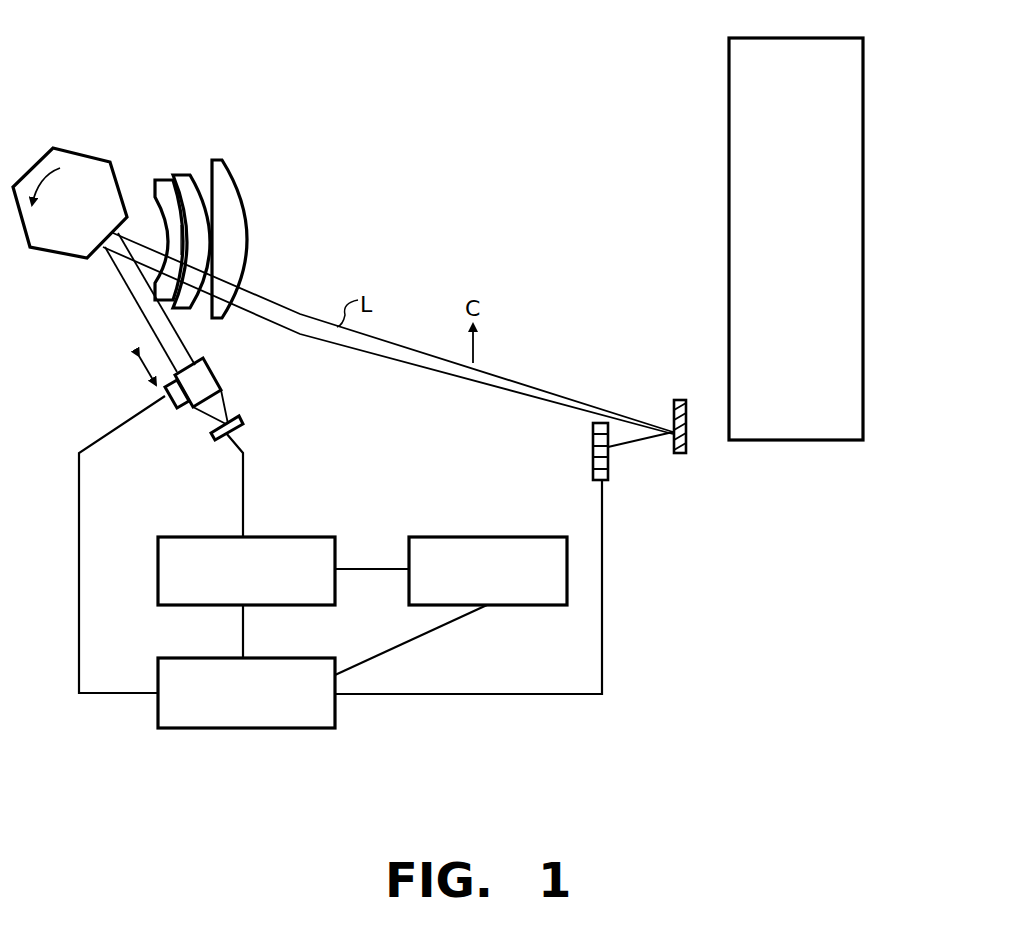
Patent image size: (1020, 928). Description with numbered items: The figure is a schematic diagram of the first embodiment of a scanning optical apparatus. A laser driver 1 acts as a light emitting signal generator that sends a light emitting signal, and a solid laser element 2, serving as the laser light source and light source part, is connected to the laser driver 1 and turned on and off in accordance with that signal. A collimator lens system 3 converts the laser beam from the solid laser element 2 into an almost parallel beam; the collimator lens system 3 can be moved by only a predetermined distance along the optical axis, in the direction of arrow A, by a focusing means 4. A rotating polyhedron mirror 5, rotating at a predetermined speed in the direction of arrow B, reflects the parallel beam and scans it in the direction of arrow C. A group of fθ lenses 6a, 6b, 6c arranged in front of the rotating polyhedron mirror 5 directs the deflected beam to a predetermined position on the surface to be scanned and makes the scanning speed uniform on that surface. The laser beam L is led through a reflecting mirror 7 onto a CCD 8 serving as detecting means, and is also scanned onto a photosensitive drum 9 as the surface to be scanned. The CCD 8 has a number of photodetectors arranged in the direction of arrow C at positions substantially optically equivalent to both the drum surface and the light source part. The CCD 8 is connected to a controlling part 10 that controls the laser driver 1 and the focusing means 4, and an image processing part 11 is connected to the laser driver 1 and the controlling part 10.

The laser driver 1 is at (298, 537).
The solid laser element 2 is at (240, 421).
The collimator lens system 3 is at (232, 378).
The focusing means 4 is at (177, 410).
The rotating polyhedron mirror 5 is at (65, 148).
The fθ lens 6a is at (163, 177).
The fθ lens 6b is at (182, 173).
The fθ lens 6c is at (233, 180).
The reflecting mirror 7 is at (678, 400).
The CCD 8 is at (608, 470).
The photosensitive drum 9 is at (728, 62).
The controlling part 10 is at (260, 730).
The image processing part 11 is at (493, 537).